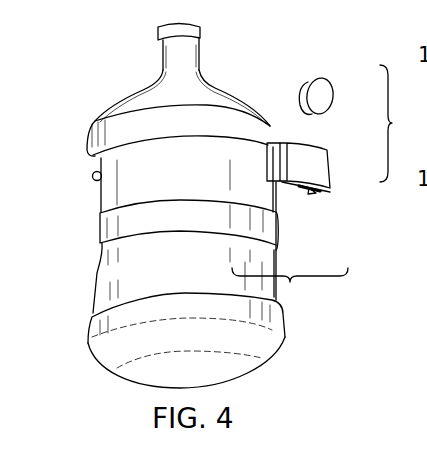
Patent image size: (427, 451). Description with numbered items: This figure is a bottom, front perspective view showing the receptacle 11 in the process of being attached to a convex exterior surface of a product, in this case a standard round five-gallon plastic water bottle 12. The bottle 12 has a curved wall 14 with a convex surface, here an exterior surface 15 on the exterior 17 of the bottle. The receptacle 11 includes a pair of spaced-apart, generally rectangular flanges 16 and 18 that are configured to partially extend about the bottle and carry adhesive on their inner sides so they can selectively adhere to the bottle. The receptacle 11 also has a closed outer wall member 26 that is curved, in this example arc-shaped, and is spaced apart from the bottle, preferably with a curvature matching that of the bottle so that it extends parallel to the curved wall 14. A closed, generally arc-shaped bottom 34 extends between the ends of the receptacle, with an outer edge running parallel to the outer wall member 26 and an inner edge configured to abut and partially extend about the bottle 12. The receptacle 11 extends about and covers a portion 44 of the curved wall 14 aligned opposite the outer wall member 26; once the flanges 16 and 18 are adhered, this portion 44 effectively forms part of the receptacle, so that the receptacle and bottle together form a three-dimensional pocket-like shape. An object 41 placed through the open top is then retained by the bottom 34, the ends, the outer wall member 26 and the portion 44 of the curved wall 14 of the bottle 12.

The receptacle 11 is at (327, 172).
The water bottle 12 is at (193, 206).
The curved wall 14 is at (130, 178).
The exterior surface 15 is at (184, 184).
The flange 16 is at (313, 193).
The exterior 17 is at (262, 294).
The flange 18 is at (275, 147).
The outer wall member 26 is at (321, 175).
The bottom 34 is at (322, 192).
The object 41 is at (326, 80).
The portion of the curved wall 44 is at (245, 177).